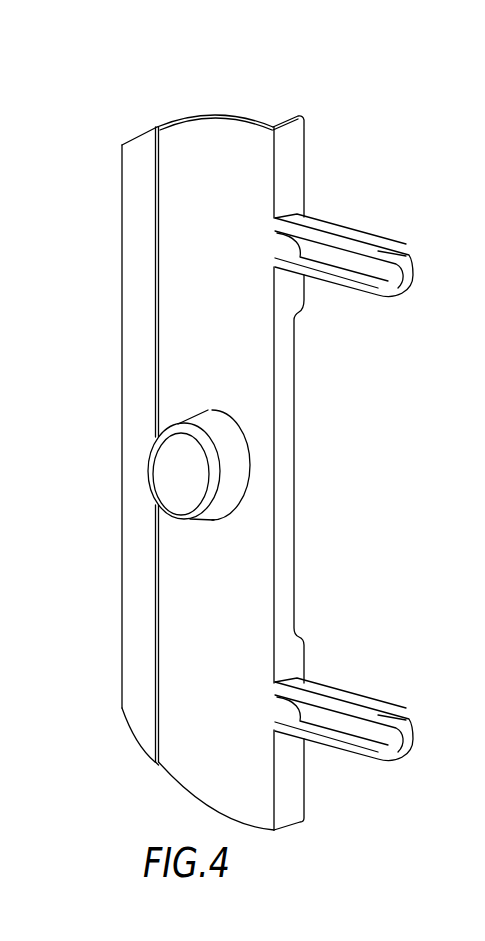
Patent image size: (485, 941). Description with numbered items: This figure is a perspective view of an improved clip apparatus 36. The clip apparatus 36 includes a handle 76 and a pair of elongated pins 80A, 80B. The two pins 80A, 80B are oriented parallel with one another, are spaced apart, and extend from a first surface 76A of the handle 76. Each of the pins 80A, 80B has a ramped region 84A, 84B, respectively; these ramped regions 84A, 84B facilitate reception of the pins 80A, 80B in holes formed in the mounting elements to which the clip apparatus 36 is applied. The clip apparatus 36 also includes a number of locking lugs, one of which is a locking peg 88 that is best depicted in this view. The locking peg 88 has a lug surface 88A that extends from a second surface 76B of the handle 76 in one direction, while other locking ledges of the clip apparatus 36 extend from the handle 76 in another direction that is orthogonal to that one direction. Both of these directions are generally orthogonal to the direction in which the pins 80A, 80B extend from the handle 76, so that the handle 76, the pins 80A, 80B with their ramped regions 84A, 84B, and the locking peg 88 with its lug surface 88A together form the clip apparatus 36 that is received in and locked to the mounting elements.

The clip apparatus 36 is at (226, 436).
The handle 76 is at (226, 441).
The first surface 76A is at (287, 437).
The second surface 76B is at (177, 342).
The locking peg 88 is at (253, 450).
The lug surface 88A is at (235, 490).
The elongated pin 80A is at (345, 283).
The ramped region 84A is at (337, 295).
The elongated pin 80B is at (344, 734).
The ramped region 84B is at (341, 757).